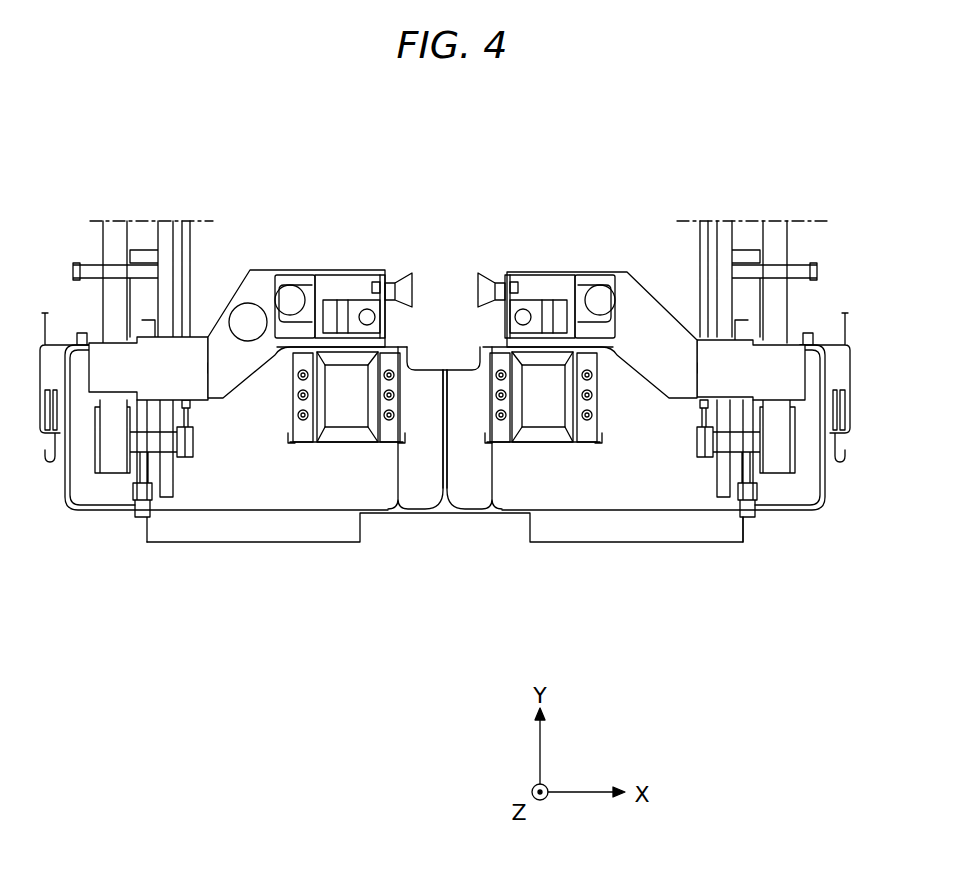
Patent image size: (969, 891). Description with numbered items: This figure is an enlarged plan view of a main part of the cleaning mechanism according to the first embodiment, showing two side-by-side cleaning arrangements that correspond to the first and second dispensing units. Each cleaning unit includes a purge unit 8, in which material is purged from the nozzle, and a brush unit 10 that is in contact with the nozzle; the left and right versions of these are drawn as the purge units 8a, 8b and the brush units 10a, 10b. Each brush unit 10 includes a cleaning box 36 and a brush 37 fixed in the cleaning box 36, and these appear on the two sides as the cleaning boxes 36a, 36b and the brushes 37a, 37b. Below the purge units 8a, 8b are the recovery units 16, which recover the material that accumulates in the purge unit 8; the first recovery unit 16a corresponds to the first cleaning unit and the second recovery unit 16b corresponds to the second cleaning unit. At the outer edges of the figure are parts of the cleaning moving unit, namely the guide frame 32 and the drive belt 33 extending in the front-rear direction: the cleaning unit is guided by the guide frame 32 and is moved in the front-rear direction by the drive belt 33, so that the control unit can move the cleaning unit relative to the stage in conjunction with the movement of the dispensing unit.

The purge unit 8 is at (454, 489).
The first clamp unit 8a is at (345, 432).
The second clamp unit 8b is at (543, 435).
The brush unit 10 is at (452, 240).
The first head unit 10a is at (334, 240).
The second head unit 10b is at (563, 240).
The recovery unit 16 is at (458, 473).
The first recovery unit 16a is at (403, 514).
The second recovery unit 16b is at (482, 514).
The guide frame 32 is at (167, 226).
The drive belt 33 is at (113, 226).
The cleaning box 36 is at (368, 210).
The first holder 36a is at (352, 272).
The second holder 36b is at (542, 272).
The brush 37 is at (293, 232).
The first pressing member 37a is at (347, 310).
The second pressing member 37b is at (543, 310).